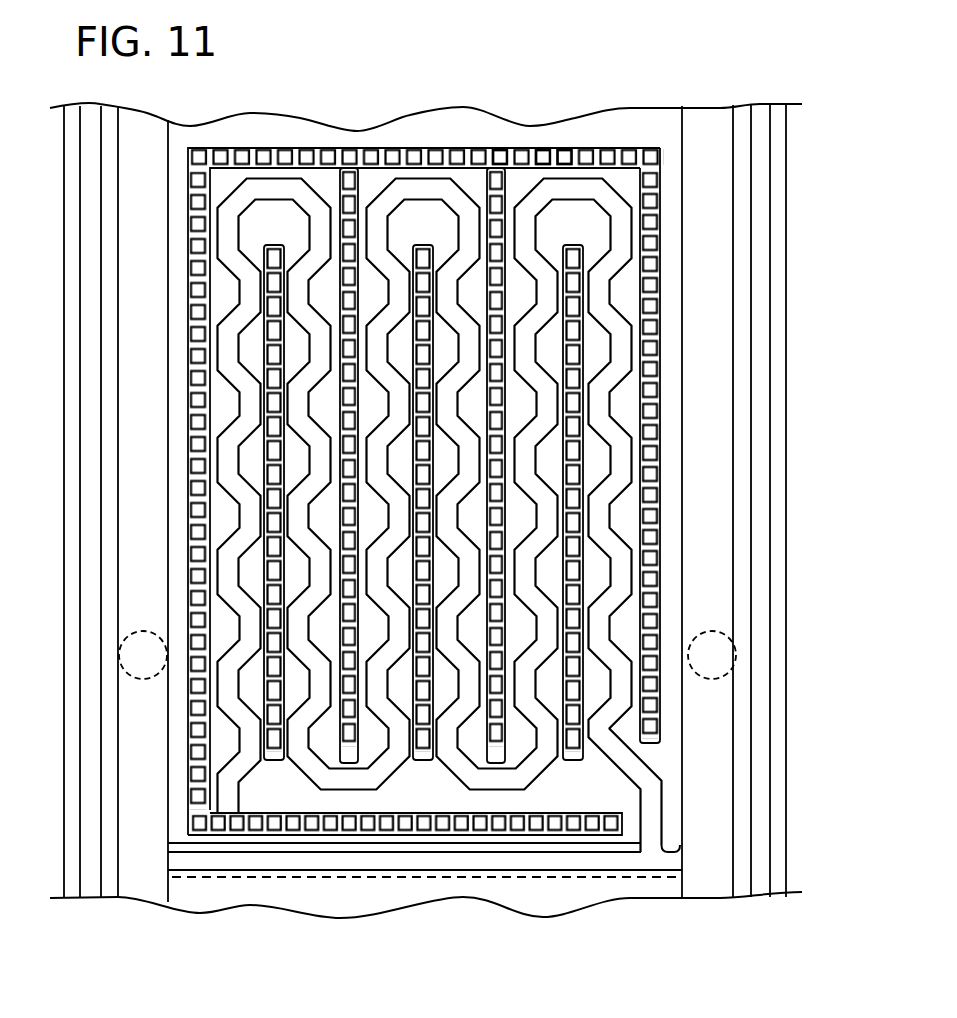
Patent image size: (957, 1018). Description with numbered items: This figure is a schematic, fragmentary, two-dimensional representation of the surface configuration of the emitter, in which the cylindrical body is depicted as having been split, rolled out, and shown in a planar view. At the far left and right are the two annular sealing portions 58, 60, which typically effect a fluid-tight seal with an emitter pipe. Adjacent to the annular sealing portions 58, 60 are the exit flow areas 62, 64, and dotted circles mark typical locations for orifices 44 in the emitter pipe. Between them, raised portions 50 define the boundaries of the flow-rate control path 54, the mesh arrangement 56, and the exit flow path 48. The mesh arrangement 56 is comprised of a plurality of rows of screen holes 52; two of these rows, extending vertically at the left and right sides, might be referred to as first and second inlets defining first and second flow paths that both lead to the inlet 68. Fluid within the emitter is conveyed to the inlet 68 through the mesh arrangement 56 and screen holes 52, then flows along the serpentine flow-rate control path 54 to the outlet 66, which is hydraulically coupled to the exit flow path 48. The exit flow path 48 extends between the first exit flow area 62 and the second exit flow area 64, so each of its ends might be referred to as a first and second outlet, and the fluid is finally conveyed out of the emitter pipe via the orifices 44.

The orifices 44 is at (128, 683).
The exit flow path 48 is at (455, 858).
The raised portion 50 is at (266, 216).
The screen holes 52 is at (561, 152).
The flow-rate control path 54 is at (427, 188).
The mesh arrangement 56 is at (289, 150).
The annular sealing portion 58 is at (120, 905).
The annular sealing portion 60 is at (792, 903).
The exit flow area 62 is at (158, 216).
The exit flow area 64 is at (726, 242).
The outlet 66 is at (655, 843).
The inlet 68 is at (232, 803).